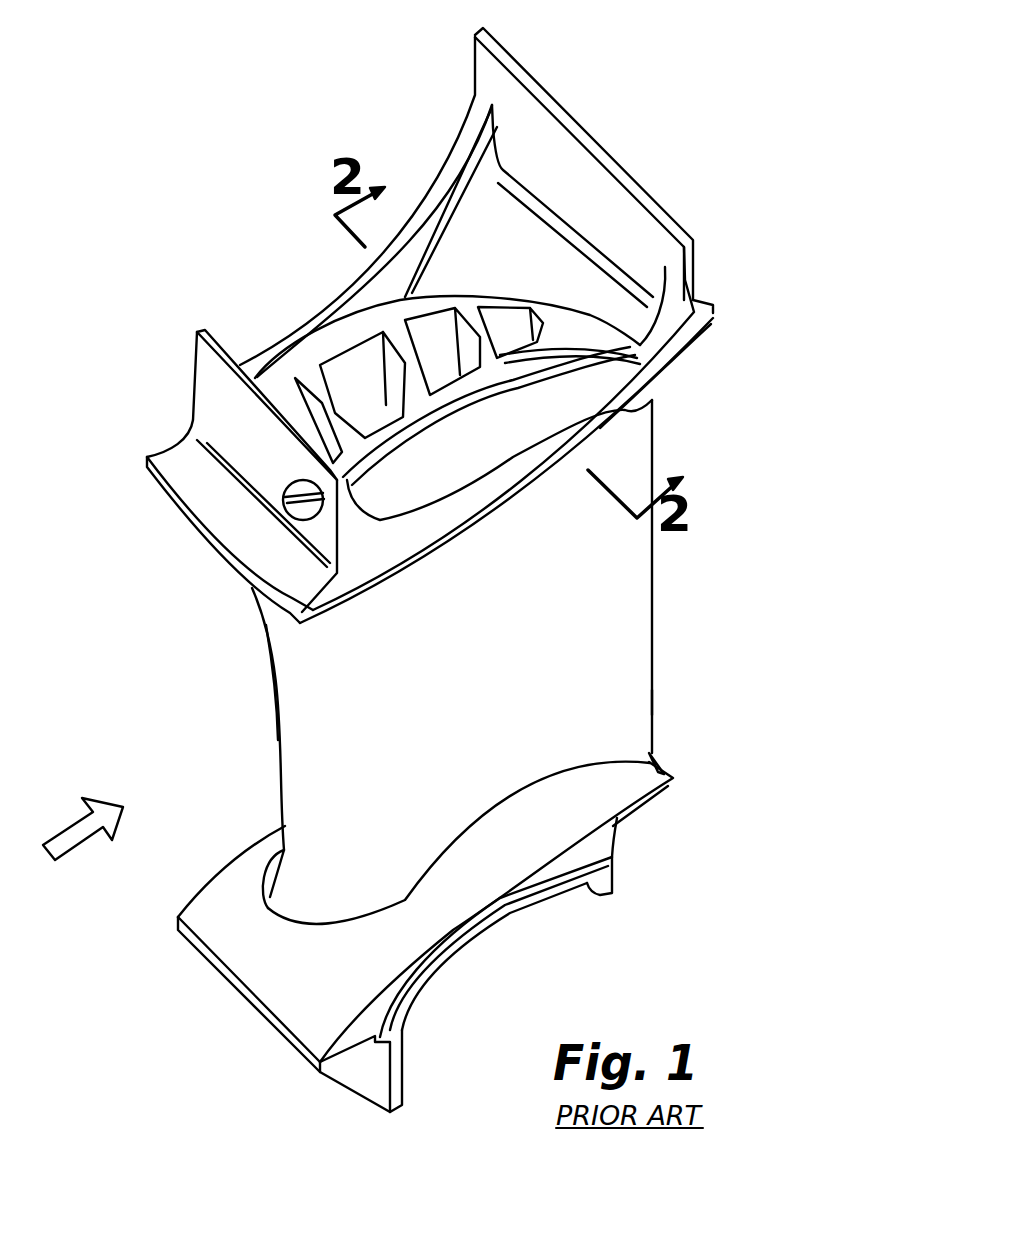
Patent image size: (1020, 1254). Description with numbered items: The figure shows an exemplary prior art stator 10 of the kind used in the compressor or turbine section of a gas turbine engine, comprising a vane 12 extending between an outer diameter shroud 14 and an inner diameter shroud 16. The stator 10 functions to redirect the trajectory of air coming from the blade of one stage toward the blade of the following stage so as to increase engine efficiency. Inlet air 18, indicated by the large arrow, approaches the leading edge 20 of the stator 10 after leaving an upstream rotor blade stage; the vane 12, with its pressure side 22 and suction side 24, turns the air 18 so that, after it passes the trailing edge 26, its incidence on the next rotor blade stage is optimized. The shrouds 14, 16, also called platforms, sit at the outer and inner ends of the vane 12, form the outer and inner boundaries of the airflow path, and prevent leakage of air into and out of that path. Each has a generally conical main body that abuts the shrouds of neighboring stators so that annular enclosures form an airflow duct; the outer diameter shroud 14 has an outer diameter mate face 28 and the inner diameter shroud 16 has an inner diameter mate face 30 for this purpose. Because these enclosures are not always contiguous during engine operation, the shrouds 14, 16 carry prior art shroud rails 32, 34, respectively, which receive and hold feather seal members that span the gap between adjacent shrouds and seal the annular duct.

The stator 10 is at (787, 476).
The vane 12 is at (653, 567).
The outer diameter shroud 14 is at (707, 293).
The inner diameter shroud 16 is at (663, 763).
The inlet air 18 is at (72, 832).
The leading edge 20 is at (277, 725).
The pressure side 22 is at (615, 648).
The suction side 24 is at (270, 882).
The trailing edge 26 is at (652, 703).
The outer diameter mate face 28 is at (423, 565).
The inner diameter mate face 30 is at (453, 962).
The shroud rail 32 is at (660, 358).
The shroud rail 34 is at (522, 908).